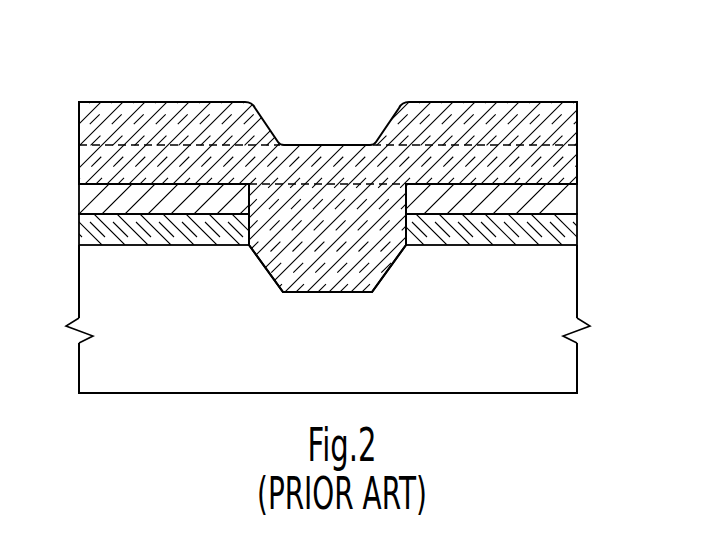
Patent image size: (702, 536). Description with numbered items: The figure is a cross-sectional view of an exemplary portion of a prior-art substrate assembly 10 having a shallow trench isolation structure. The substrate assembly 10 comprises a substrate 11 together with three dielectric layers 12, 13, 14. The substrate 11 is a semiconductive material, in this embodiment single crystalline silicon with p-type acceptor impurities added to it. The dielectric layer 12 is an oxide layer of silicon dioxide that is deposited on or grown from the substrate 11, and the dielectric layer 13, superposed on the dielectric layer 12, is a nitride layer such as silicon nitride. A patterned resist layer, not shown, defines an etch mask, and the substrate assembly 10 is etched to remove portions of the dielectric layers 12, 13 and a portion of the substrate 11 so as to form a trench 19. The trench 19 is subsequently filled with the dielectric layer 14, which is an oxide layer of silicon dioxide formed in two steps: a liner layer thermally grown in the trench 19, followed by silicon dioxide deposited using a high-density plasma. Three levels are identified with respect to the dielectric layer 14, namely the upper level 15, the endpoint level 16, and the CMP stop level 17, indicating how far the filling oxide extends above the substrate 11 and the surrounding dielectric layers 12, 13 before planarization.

The substrate assembly 10 is at (118, 32).
The substrate 11 is at (503, 321).
The dielectric layer 12 is at (578, 226).
The dielectric layer 13 is at (578, 195).
The dielectric layer 14 is at (341, 228).
The upper level 15 is at (551, 100).
The endpoint level 16 is at (551, 143).
The CMP stop level 17 is at (551, 183).
The trench 19 is at (328, 293).